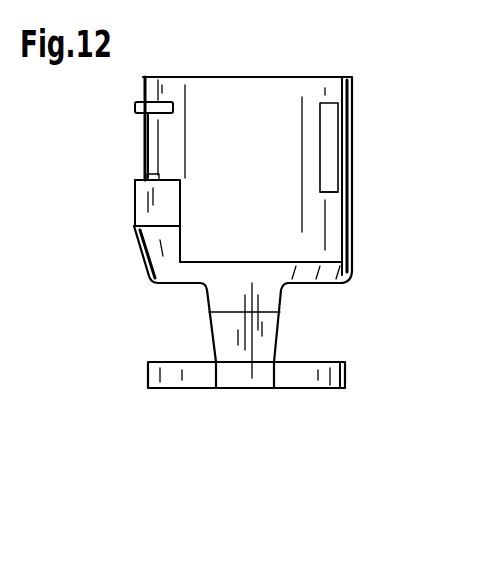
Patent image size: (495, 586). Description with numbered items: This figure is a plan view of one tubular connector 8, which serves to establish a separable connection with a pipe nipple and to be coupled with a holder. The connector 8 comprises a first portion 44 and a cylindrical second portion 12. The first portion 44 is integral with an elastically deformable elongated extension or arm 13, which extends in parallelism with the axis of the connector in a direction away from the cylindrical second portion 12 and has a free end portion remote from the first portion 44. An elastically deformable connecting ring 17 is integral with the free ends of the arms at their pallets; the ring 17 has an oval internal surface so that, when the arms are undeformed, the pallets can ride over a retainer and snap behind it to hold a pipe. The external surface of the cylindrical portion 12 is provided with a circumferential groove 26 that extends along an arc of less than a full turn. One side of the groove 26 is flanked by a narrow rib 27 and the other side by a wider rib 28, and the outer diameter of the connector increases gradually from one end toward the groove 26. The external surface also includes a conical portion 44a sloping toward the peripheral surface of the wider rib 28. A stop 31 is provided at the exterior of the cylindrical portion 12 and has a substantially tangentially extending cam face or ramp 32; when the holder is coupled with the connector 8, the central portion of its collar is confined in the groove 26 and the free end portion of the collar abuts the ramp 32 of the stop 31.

The tubular connector 8 is at (357, 205).
The cylindrical second portion 12 is at (355, 105).
The elongated extension or arm 13 is at (262, 332).
The connecting ring 17 is at (346, 376).
The circumferential groove 26 is at (143, 146).
The narrow rib 27 is at (134, 106).
The wider rib 28 is at (136, 180).
The stop 31 is at (352, 145).
The cam face or ramp 32 is at (327, 175).
The first portion 44 is at (328, 243).
The conical portion 44a is at (140, 255).